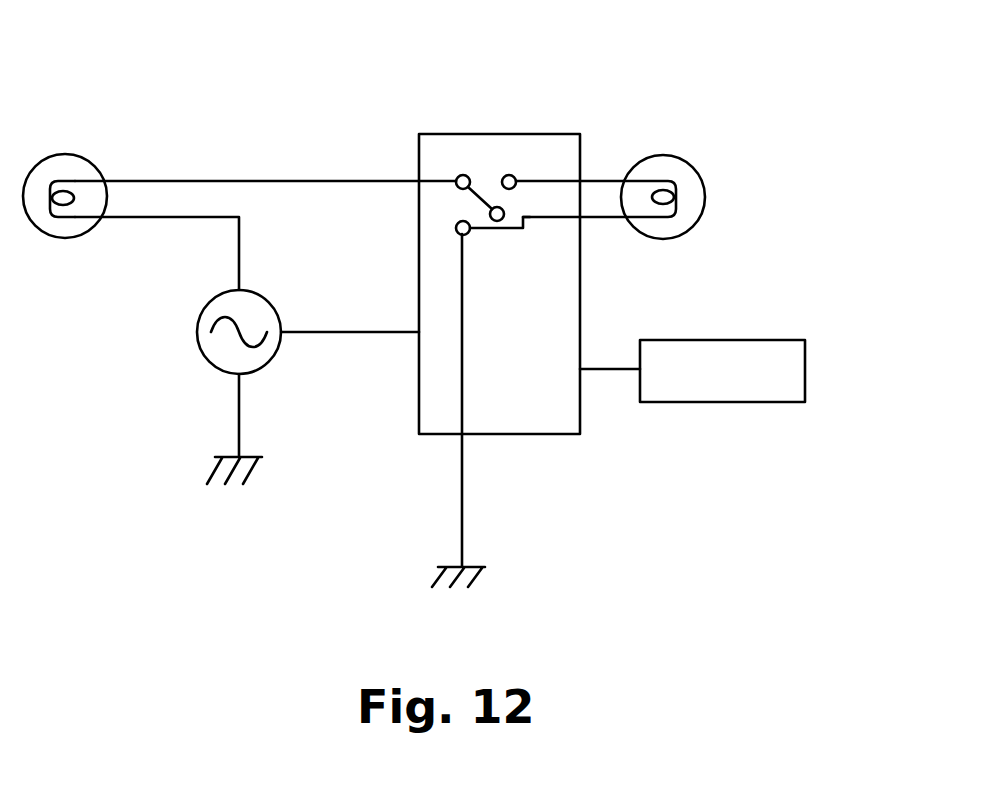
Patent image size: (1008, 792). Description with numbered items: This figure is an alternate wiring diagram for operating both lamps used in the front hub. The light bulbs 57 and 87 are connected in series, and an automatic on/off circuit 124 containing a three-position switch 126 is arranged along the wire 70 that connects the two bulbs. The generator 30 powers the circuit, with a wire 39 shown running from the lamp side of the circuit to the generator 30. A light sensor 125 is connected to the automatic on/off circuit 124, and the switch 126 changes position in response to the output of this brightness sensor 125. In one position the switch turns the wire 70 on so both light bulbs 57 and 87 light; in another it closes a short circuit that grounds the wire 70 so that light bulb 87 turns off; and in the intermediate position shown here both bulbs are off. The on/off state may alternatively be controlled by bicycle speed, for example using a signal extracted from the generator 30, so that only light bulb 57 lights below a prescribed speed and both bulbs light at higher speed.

The light bulb 57 is at (83, 155).
The wire 70 is at (273, 181).
The wire 39 is at (239, 230).
The generator 30 is at (272, 357).
The automatic on/off circuit 124 is at (482, 434).
The three-position switch 126 is at (483, 193).
The light bulb 87 is at (692, 166).
The light sensor 125 is at (805, 376).